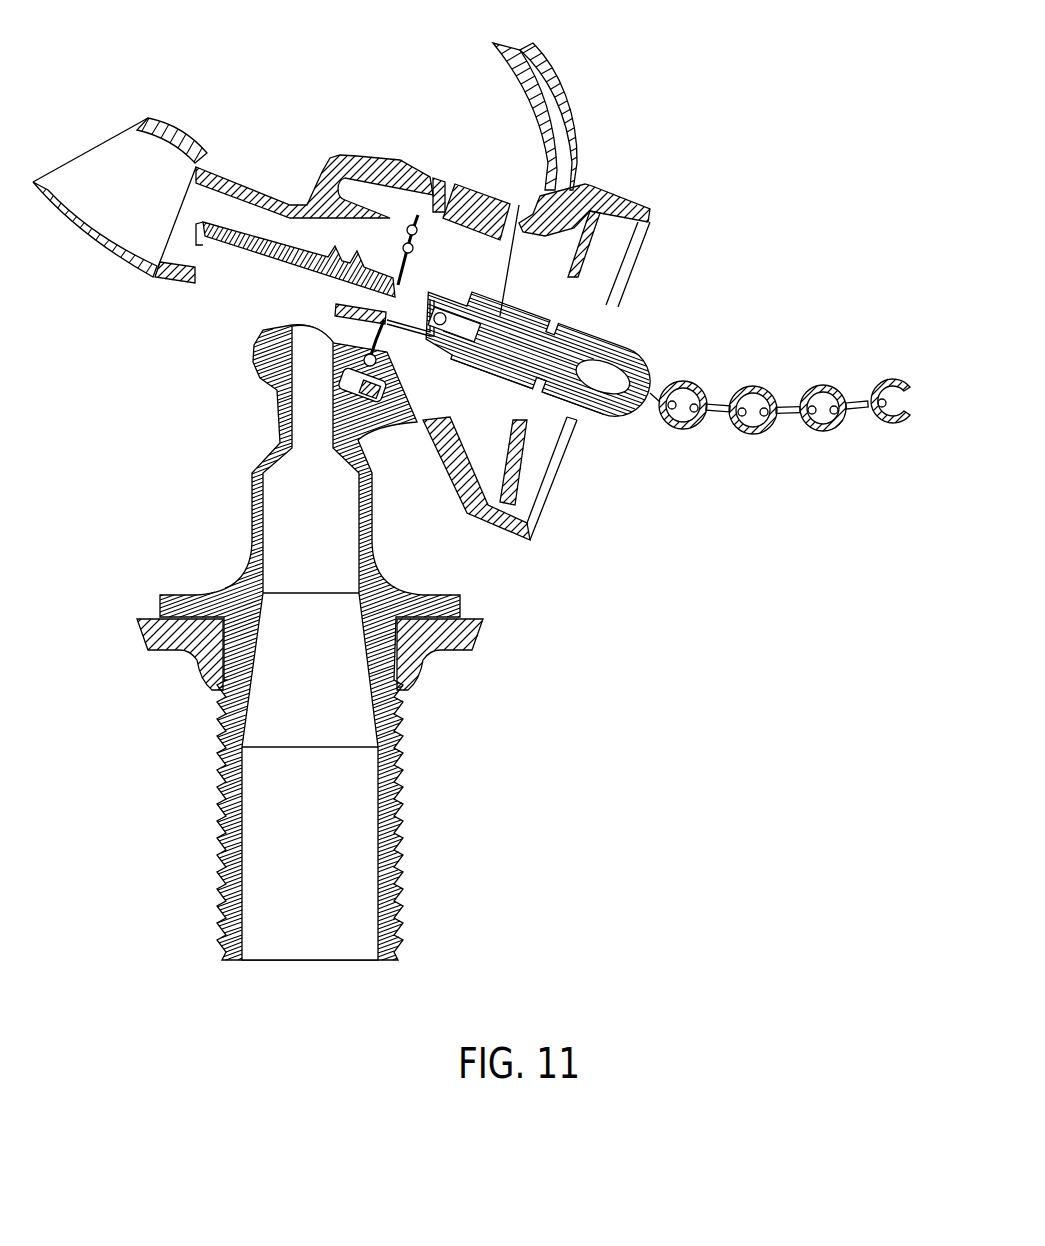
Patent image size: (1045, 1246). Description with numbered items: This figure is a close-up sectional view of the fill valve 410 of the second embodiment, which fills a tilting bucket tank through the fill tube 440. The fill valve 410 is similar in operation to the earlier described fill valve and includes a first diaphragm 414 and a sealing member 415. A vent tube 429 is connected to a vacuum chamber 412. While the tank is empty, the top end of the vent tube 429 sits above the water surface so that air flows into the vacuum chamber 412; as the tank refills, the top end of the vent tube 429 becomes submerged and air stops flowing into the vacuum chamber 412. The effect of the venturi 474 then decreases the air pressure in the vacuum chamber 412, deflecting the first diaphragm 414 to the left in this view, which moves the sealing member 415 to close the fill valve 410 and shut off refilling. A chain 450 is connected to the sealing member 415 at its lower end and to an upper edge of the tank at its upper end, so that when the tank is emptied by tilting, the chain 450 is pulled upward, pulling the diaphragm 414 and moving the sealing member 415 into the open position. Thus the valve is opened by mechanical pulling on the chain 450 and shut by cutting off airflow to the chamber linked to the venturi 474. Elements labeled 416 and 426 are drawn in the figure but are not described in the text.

The fill valve 410 is at (677, 219).
The vacuum chamber 412 is at (533, 263).
The first diaphragm 414 is at (597, 243).
The sealing member 415 is at (247, 267).
The spring 416 is at (400, 258).
The inlet riser 426 is at (292, 517).
The vent tube 429 is at (555, 62).
The fill tube 440 is at (103, 202).
The chain 450 is at (753, 437).
The venturi 474 is at (232, 216).